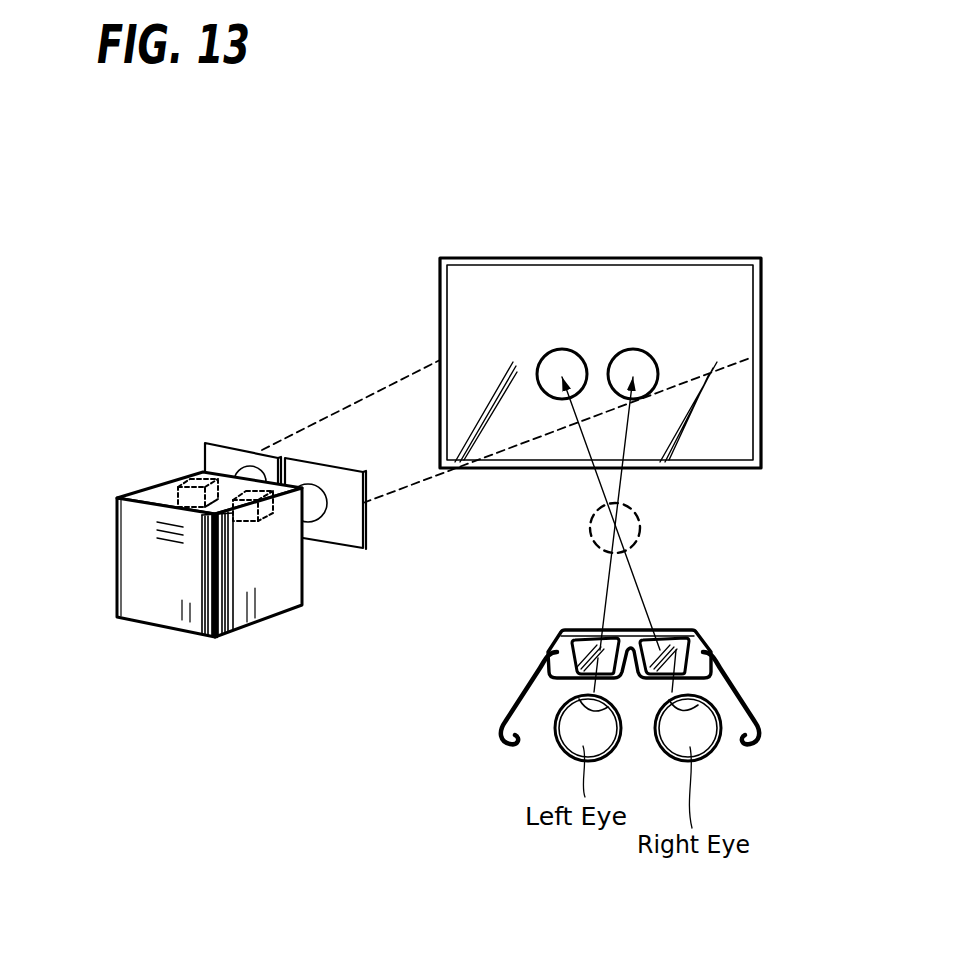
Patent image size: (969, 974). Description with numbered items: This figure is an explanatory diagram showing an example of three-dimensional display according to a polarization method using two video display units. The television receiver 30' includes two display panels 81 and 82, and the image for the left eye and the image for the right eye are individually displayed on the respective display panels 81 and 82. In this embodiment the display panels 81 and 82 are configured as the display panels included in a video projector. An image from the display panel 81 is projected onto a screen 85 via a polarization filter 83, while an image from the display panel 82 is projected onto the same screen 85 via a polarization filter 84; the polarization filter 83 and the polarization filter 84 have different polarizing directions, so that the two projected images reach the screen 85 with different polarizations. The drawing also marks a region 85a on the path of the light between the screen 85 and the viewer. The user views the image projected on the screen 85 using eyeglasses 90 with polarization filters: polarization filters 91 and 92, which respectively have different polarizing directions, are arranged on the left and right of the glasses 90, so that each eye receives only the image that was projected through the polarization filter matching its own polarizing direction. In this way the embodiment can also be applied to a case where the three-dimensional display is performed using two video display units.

The television receiver 30' is at (223, 574).
The display panel 81 is at (178, 493).
The display panel 82 is at (260, 523).
The polarization filter 83 is at (205, 455).
The polarization filter 84 is at (366, 536).
The screen 85 is at (620, 257).
The crossing point of light rays 85a is at (641, 522).
The eyeglasses with polarization filters 90 is at (623, 653).
The polarization filter 91 is at (580, 653).
The polarization filter 92 is at (678, 653).